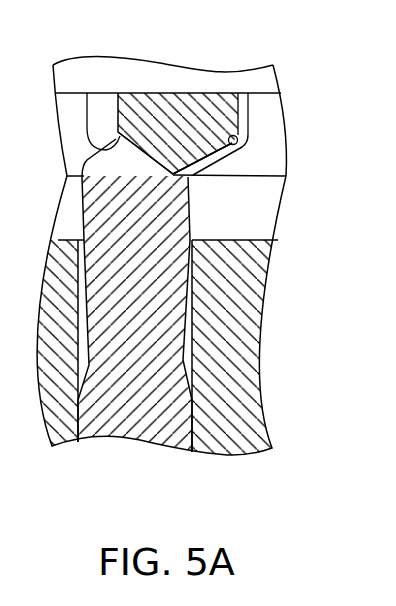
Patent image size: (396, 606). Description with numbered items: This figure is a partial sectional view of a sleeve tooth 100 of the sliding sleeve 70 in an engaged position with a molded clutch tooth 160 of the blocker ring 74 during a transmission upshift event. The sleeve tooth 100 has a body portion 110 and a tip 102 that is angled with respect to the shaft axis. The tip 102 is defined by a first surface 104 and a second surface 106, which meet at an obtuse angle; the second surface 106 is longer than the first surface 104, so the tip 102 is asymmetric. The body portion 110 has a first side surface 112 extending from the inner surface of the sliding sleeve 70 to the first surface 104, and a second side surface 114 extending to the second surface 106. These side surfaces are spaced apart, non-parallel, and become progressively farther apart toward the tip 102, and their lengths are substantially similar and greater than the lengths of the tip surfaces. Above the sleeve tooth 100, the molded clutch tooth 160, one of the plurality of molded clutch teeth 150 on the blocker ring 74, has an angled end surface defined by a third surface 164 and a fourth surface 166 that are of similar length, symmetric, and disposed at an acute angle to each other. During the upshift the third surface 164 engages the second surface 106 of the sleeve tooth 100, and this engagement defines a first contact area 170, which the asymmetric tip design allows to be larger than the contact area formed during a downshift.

The sliding sleeve 70 is at (264, 465).
The blocker ring 74 is at (305, 113).
The sleeve tooth 100 is at (139, 441).
The tip 102 is at (68, 189).
The first surface 104 is at (96, 158).
The second surface 106 is at (184, 181).
The body portion 110 is at (149, 382).
The first side surface 112 is at (80, 214).
The second side surface 114 is at (190, 236).
The plurality of molded clutch teeth 150 is at (159, 82).
The molded clutch tooth 160 is at (194, 134).
The third surface 164 is at (138, 163).
The fourth surface 166 is at (204, 173).
The first contact area 170 is at (203, 176).